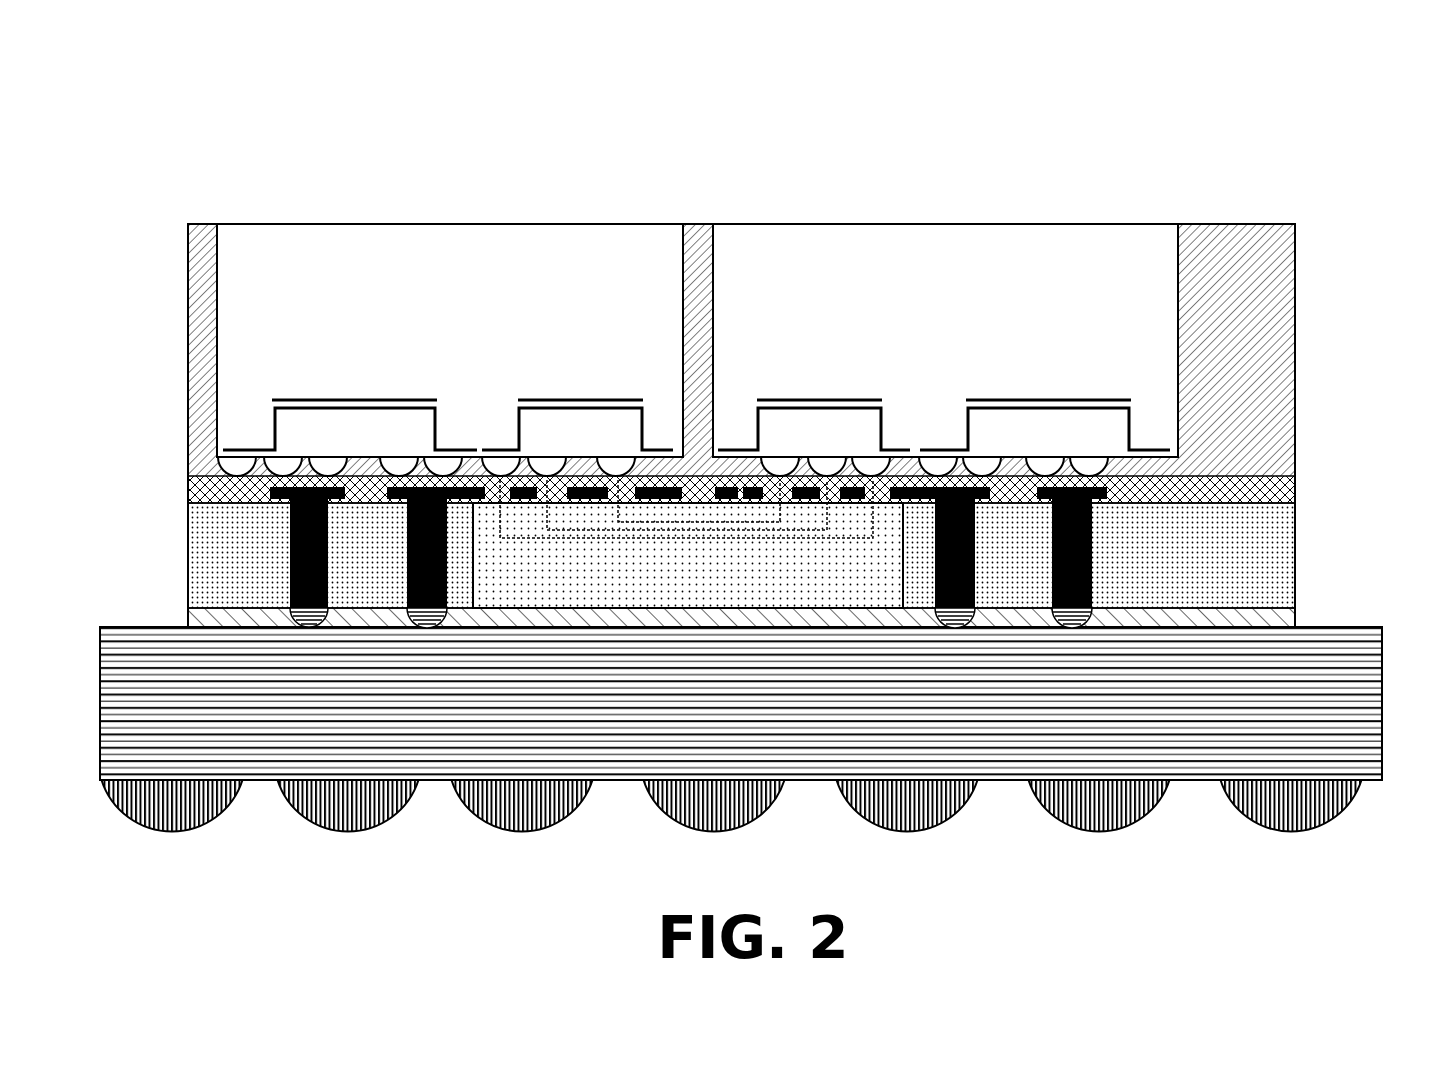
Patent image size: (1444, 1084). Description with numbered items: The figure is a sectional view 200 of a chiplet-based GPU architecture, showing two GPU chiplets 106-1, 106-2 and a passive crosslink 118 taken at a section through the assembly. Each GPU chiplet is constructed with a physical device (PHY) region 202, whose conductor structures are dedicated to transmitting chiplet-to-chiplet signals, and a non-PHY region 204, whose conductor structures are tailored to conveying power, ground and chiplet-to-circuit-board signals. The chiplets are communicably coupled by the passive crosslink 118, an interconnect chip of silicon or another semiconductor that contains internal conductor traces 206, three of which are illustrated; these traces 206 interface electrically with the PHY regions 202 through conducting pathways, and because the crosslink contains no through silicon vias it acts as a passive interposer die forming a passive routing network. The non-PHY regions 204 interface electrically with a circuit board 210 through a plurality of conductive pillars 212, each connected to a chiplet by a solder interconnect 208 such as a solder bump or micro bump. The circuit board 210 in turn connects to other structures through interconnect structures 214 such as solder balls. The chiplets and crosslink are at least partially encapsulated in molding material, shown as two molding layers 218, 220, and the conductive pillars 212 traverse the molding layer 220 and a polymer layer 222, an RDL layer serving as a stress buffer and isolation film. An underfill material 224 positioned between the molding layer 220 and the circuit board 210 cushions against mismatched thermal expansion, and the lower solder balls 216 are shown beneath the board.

The view 200 is at (1387, 62).
The GPU chiplet 106-1 is at (427, 283).
The GPU chiplet 106-2 is at (923, 283).
The passive crosslink 118 is at (674, 592).
The physical device (PHY) region 202 is at (580, 398).
The non-PHY region 204 is at (355, 398).
The traces 206 is at (785, 538).
The solder interconnect 208 is at (325, 467).
The circuit board 210 is at (1362, 638).
The conductive pillar 212 is at (1093, 562).
The interconnect structure 214 is at (1092, 612).
The solder balls 216 is at (1347, 807).
The molding layer 218 is at (1295, 350).
The molding layer 220 is at (1295, 568).
The polymer layer 222 is at (1295, 495).
The underfill material 224 is at (1295, 620).